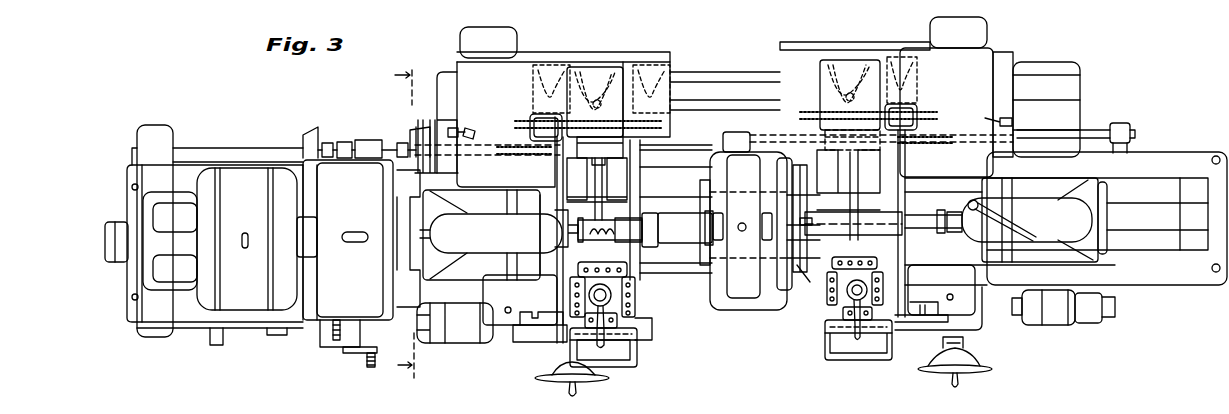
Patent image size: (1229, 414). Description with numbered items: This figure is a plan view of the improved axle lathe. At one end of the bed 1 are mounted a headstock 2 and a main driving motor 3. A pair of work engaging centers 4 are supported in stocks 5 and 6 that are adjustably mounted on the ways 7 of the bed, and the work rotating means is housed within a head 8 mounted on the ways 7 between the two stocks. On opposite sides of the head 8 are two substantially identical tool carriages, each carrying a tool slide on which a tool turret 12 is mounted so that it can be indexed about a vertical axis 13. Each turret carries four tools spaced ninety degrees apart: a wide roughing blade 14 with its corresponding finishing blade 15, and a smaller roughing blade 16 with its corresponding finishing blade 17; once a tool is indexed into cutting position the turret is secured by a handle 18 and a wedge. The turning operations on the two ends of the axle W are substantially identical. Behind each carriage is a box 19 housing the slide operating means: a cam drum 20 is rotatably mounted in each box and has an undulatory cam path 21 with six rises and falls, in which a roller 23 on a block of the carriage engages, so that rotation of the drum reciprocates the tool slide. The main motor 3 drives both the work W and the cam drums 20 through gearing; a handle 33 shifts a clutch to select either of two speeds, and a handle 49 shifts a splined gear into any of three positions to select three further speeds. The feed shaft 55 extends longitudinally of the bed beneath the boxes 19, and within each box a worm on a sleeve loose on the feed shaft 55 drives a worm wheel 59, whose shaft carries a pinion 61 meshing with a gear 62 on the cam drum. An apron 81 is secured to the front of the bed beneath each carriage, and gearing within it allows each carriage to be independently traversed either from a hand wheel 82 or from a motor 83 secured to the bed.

The bed 1 is at (1128, 275).
The headstock 2 is at (325, 307).
The main driving motor 3 is at (232, 305).
The work engaging centers 4 is at (395, 221).
The stock 5 is at (400, 263).
The stock 6 is at (1080, 180).
The ways 7 is at (1160, 173).
The head 8 is at (745, 295).
The tool turret 12 is at (627, 272).
The vertical axis 13 is at (611, 295).
The wide roughing blade 14 is at (612, 262).
The finishing blade 15 is at (568, 294).
The smaller roughing blade 16 is at (623, 340).
The finishing blade 17 is at (645, 322).
The handle 18 is at (590, 323).
The box 19 is at (510, 68).
The cam drum 20 is at (750, 95).
The undulatory cam path 21 is at (655, 65).
The roller 23 is at (612, 67).
The handle 33 is at (340, 325).
The handle 49 is at (365, 365).
The feed shaft 55 is at (226, 150).
The worm wheel 59 is at (505, 150).
The pinion 61 is at (525, 130).
The gear 62 is at (668, 122).
The apron 81 is at (1005, 333).
The hand wheel 82 is at (558, 382).
The motor 83 is at (470, 343).
The axle W is at (672, 220).